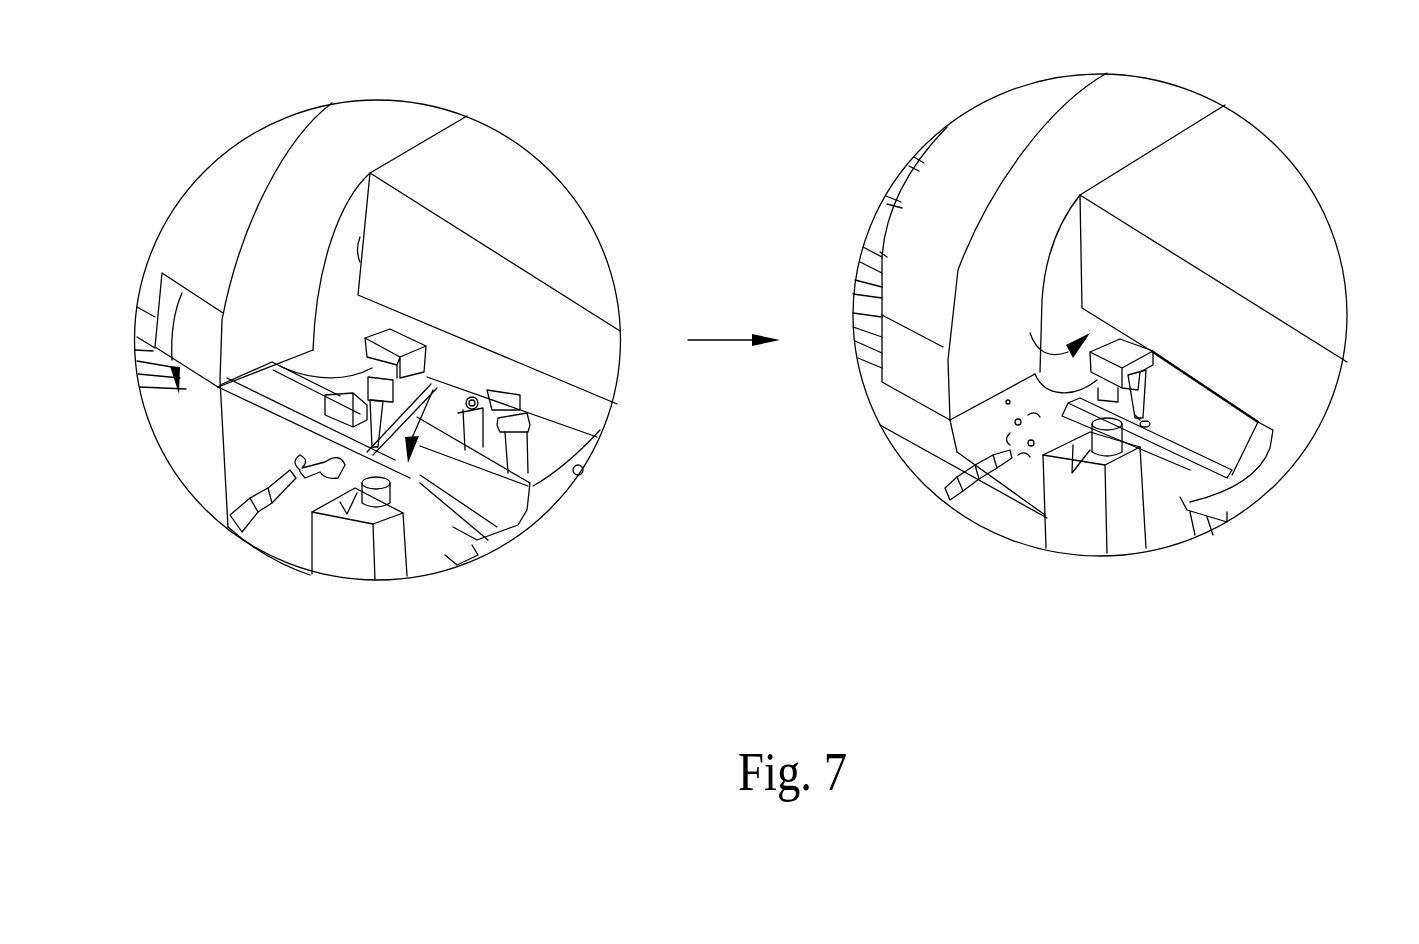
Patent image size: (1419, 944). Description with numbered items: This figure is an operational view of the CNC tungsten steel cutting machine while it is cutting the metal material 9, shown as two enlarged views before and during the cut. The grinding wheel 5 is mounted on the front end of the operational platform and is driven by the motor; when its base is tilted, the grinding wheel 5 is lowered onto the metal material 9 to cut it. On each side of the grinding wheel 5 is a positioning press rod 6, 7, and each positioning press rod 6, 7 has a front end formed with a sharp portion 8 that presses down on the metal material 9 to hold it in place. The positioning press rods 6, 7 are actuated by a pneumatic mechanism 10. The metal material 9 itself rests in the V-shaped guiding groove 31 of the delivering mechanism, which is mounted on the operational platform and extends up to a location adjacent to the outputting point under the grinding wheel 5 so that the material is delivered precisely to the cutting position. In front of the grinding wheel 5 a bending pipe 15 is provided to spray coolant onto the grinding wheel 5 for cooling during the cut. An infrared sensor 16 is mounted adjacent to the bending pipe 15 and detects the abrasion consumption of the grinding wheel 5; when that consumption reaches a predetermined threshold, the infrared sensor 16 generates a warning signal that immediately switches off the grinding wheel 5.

The grinding wheel 5 is at (365, 376).
The positioning press rod 6 is at (440, 388).
The positioning press rod 7 is at (407, 342).
The sharp portion 8 is at (1153, 407).
The metal material 9 is at (408, 480).
The pneumatic mechanism 10 is at (517, 450).
The bending pipe 15 is at (240, 522).
The infrared sensor 16 is at (362, 498).
The V-shaped guiding groove 31 is at (493, 503).